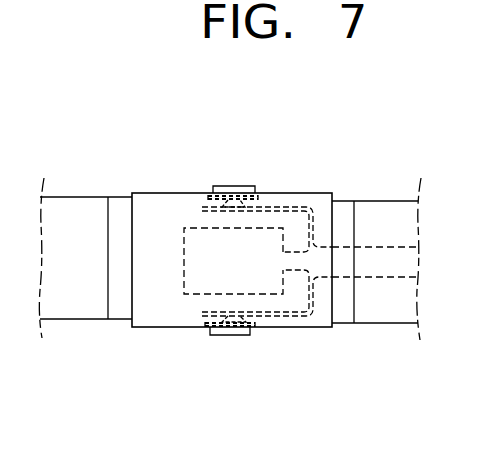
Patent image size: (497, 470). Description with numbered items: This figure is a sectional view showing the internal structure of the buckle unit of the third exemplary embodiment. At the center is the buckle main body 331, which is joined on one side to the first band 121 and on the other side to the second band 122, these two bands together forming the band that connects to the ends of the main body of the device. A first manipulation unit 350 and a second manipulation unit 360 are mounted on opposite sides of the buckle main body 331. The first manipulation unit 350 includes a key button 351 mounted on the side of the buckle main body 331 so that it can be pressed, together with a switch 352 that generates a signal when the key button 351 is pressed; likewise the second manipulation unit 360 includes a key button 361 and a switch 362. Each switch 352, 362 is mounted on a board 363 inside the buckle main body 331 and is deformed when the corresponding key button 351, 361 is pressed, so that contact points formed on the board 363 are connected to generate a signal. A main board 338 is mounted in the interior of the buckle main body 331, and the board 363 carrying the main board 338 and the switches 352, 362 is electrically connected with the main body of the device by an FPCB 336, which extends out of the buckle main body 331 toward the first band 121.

The first band 121 is at (380, 308).
The second band 122 is at (71, 303).
The buckle main body 331 is at (153, 200).
The FPCB 336 is at (378, 253).
The main board 338 is at (184, 278).
The first manipulation unit 350 is at (235, 139).
The key button 351 is at (222, 187).
The switch 352 is at (243, 207).
The second manipulation unit 360 is at (230, 383).
The key button 361 is at (222, 335).
The switch 362 is at (240, 321).
The board 363 is at (292, 207).